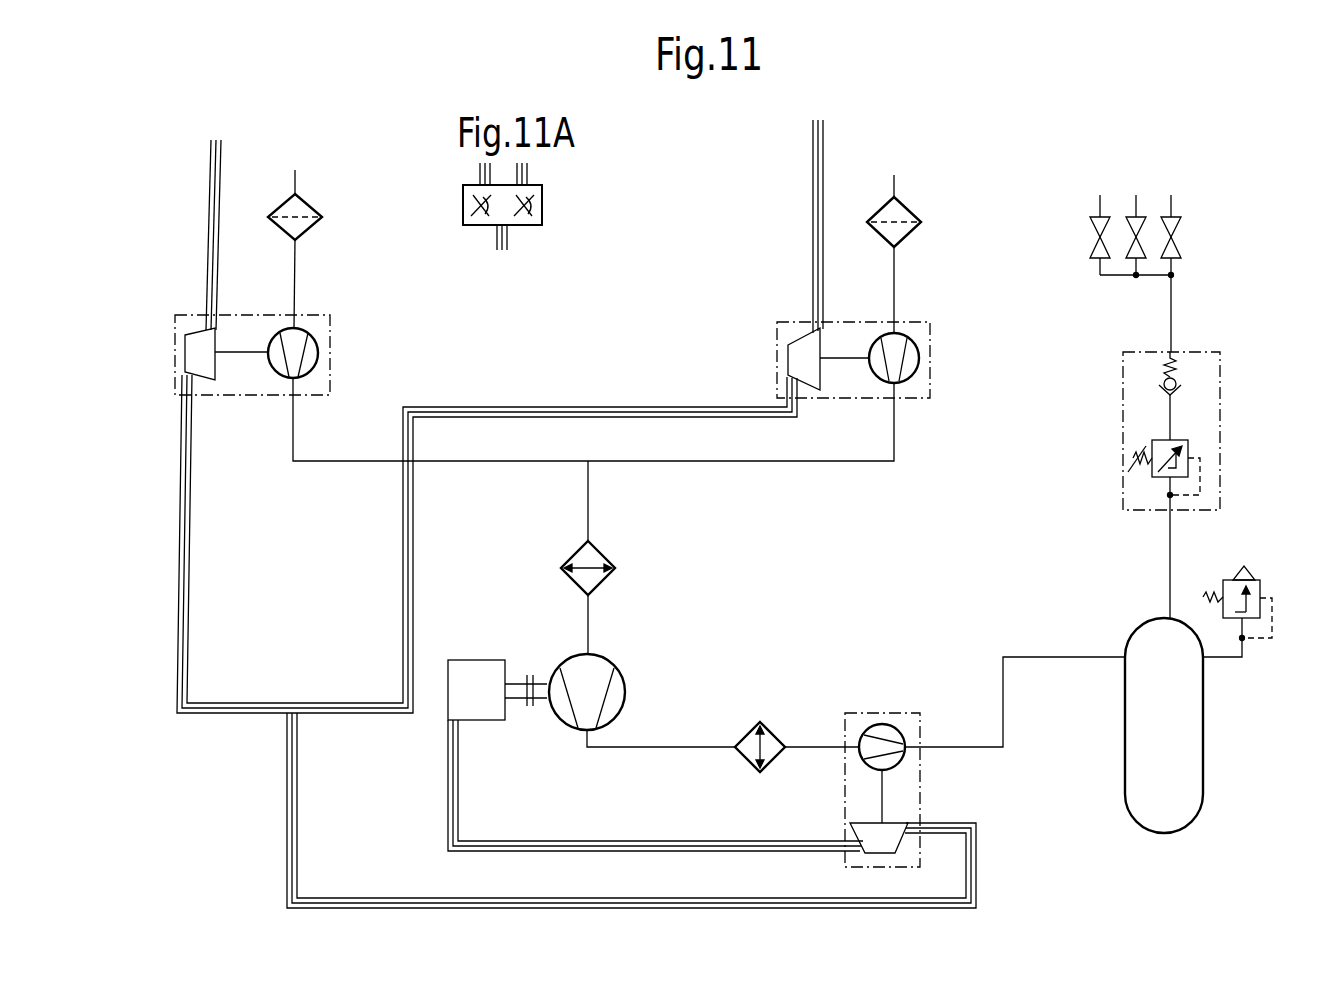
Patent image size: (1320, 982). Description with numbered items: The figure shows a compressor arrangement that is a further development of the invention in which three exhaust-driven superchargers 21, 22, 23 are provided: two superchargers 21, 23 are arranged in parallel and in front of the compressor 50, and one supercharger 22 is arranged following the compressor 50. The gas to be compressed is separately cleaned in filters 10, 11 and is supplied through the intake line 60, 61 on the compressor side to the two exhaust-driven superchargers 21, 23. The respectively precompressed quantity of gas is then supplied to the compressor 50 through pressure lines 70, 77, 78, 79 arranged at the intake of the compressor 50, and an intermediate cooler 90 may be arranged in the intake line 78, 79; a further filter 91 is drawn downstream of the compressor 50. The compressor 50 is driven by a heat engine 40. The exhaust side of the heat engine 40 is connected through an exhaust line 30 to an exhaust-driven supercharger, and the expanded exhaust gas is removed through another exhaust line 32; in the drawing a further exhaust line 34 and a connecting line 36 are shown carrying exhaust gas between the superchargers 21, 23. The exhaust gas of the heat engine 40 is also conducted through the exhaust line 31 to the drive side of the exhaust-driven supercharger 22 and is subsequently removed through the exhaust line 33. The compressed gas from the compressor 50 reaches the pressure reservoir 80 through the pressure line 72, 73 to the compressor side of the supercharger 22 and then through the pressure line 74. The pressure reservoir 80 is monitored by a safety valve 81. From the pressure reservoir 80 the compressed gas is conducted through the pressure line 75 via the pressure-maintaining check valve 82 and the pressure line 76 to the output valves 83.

The filter 10 is at (317, 215).
The filter 11 is at (919, 211).
The exhaust-driven supercharger 21 is at (279, 355).
The exhaust-driven supercharger 22 is at (882, 765).
The exhaust-driven supercharger 23 is at (883, 360).
The exhaust line 30 is at (208, 544).
The exhaust line 31 is at (655, 785).
The exhaust line 32 is at (185, 235).
The exhaust line 33 is at (631, 810).
The pipe 34 is at (794, 226).
The pipe 36 is at (544, 545).
The heat engine 40 is at (497, 666).
The compressor 50 is at (611, 692).
The intake line 60 is at (325, 284).
The intake line 61 is at (924, 290).
The pressure line 70 is at (440, 419).
The pressure line 72 is at (661, 724).
The pressure line 73 is at (822, 721).
The pressure line 74 is at (1015, 702).
The pressure line 75 is at (1194, 564).
The pressure line 76 is at (1205, 313).
The pressure line 77 is at (741, 422).
The pressure line 78 is at (615, 501).
The pressure line 79 is at (615, 624).
The pressure reservoir 80 is at (1193, 725).
The safety valve 81 is at (1261, 611).
The pressure-maintaining check valve 82 is at (1196, 431).
The output valves 83 is at (1167, 236).
The intermediate cooler 90 is at (616, 568).
The filter 91 is at (760, 720).